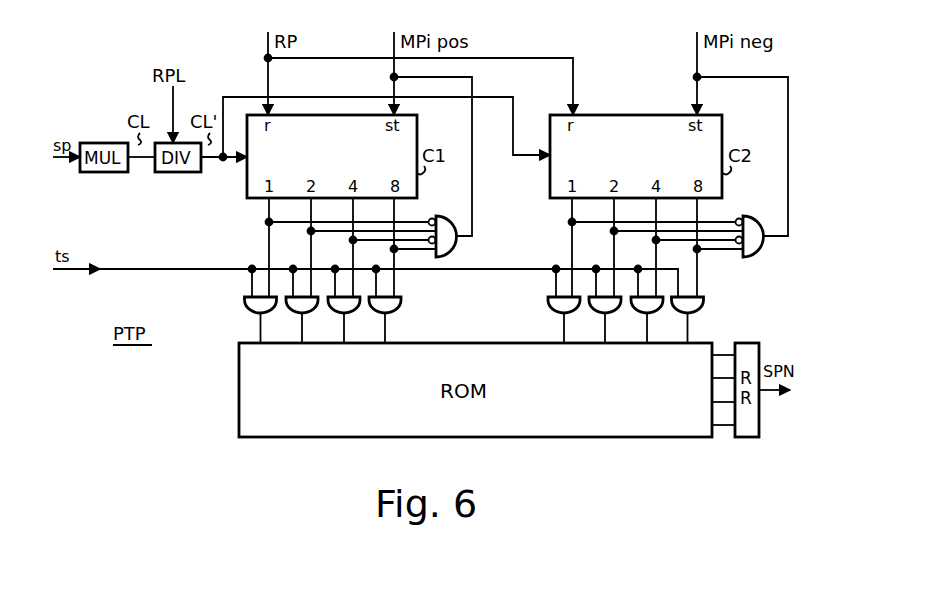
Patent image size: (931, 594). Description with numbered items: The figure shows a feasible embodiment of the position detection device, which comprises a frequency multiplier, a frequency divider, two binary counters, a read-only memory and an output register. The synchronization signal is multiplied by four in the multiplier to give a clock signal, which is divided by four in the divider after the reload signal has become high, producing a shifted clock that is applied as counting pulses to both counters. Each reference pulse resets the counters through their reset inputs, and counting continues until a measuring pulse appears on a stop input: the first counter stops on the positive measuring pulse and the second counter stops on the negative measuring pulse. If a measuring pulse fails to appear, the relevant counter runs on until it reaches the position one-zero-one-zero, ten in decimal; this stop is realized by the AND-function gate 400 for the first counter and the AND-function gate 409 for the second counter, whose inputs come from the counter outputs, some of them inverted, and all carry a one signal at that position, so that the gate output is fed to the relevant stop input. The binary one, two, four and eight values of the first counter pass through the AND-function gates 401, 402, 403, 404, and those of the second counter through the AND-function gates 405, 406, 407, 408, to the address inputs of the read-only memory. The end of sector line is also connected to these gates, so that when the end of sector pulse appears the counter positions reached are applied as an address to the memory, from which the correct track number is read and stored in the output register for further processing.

The AND-function gate 400 is at (455, 252).
The AND-function gate 401 is at (245, 312).
The AND-function gate 402 is at (287, 312).
The AND-function gate 403 is at (329, 312).
The AND-function gate 404 is at (370, 312).
The AND-function gate 405 is at (549, 312).
The AND-function gate 406 is at (590, 312).
The AND-function gate 407 is at (632, 312).
The AND-function gate 408 is at (672, 312).
The AND-function gate 409 is at (757, 256).